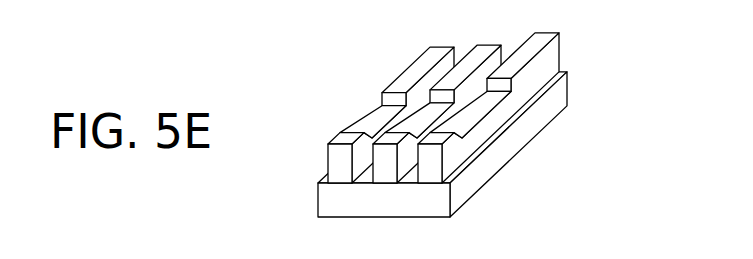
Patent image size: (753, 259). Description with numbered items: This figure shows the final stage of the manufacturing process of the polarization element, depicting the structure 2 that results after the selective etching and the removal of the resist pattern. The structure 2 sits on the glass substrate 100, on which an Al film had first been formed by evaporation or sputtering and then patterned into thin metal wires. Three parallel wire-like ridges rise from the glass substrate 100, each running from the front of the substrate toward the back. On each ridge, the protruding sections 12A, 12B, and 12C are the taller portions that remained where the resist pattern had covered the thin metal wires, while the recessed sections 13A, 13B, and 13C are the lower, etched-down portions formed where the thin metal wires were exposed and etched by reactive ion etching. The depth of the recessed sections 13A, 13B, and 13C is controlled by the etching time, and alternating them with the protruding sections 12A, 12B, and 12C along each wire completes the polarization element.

The structure 2 is at (461, 119).
The glass substrate 100 is at (491, 160).
The protruding section 12A is at (409, 66).
The protruding section 12B is at (481, 44).
The protruding section 12C is at (548, 29).
The recessed section 13A is at (370, 117).
The recessed section 13B is at (413, 120).
The recessed section 13C is at (462, 117).